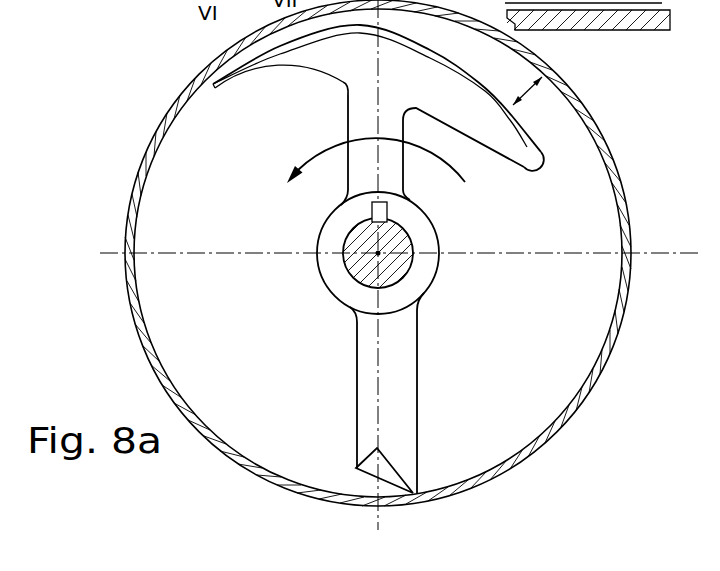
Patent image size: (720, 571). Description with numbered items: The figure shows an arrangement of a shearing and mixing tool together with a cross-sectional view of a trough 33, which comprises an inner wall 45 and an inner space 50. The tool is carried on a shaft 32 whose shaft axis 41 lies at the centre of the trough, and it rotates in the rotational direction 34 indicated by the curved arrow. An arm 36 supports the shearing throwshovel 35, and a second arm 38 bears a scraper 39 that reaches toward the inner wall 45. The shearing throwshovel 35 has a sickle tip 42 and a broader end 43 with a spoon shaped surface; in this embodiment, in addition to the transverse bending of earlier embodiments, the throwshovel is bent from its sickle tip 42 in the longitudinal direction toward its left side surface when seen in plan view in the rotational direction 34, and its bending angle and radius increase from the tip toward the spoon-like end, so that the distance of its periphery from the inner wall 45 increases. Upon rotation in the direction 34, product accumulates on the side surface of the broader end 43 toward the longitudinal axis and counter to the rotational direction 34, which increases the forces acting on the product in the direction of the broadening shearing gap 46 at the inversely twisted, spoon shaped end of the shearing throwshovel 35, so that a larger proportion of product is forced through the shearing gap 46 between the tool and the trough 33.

The shaft 32 is at (358, 268).
The trough 33 is at (628, 292).
The rotational direction 34 is at (312, 160).
The shearing throwshovel 35 is at (478, 106).
The arm 36 is at (390, 173).
The second arm 38 is at (369, 382).
The scraper 39 is at (372, 465).
The shaft axis 41 is at (388, 263).
The sickle tip 42 is at (214, 96).
The broader end 43 is at (535, 161).
The inner wall 45 is at (157, 347).
The shearing gap 46 is at (528, 92).
The inner space 50 is at (178, 204).